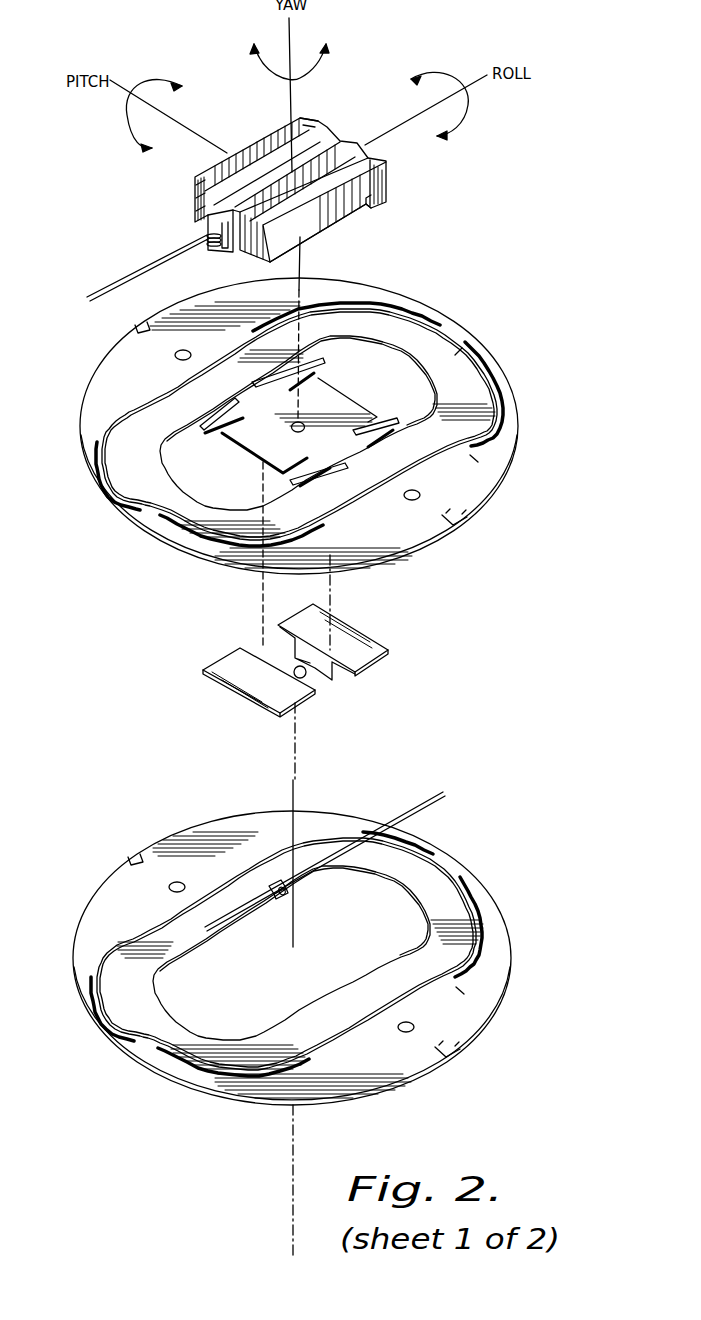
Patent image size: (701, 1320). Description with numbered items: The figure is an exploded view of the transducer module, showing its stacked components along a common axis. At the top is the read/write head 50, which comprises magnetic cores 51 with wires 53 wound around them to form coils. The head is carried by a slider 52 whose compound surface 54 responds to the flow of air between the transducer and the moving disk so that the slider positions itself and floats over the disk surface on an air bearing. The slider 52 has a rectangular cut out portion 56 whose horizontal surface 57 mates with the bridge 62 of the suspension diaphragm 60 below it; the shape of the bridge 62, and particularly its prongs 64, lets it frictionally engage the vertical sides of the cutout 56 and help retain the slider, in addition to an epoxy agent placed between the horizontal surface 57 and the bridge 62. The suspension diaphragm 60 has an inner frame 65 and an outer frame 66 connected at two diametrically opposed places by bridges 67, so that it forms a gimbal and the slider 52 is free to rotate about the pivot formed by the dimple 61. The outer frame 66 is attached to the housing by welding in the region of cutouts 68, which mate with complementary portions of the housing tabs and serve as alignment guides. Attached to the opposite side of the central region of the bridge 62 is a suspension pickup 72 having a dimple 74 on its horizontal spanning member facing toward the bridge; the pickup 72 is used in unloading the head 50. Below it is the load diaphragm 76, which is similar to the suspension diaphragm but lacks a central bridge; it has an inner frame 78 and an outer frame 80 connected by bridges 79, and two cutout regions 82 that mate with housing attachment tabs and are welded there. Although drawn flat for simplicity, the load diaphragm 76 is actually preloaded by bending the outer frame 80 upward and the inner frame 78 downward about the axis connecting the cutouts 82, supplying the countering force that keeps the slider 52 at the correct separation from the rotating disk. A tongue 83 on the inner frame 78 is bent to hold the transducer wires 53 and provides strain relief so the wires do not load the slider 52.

The read/write head 50 is at (400, 177).
The magnetic cores 51 is at (222, 255).
The slider 52 is at (203, 193).
The wires 53 is at (140, 265).
The compound surface 54 is at (349, 167).
The rectangular cut out portion 56 is at (369, 203).
The horizontal surface 57 is at (311, 232).
The suspension diaphragm 60 is at (360, 426).
The dimple 61 is at (291, 428).
The bridge 62 is at (335, 410).
The prongs 64 is at (303, 365).
The inner frame 65 is at (475, 388).
The outer frame 66 is at (475, 483).
The bridges 67 is at (445, 342).
The cutouts 68 is at (140, 328).
The suspension pickup 72 is at (395, 637).
The dimple 74 is at (308, 680).
The load diaphragm 76 is at (319, 958).
The inner frame 78 is at (355, 953).
The bridges 79 is at (440, 874).
The outer frame 80 is at (503, 1008).
The cutout regions 82 is at (288, 965).
The tongue 83 is at (280, 899).